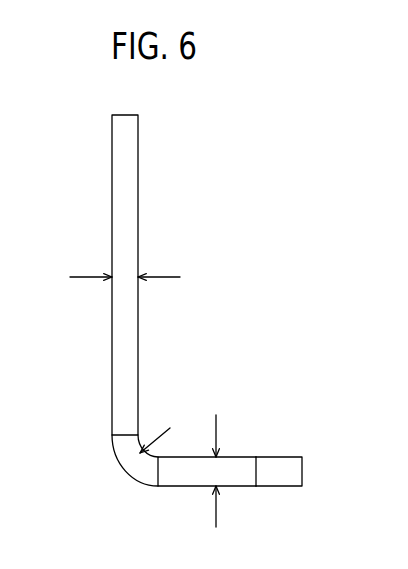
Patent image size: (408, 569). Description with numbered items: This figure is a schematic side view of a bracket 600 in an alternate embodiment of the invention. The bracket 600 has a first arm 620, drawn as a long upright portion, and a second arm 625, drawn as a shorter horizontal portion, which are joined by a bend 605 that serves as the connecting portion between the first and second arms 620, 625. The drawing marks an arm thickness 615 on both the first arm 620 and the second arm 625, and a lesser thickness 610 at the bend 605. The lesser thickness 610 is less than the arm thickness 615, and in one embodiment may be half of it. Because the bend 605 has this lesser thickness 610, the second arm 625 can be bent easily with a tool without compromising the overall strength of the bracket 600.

The bracket 600 is at (223, 152).
The bend 605 is at (143, 467).
The lesser thickness 610 is at (126, 468).
The arm thickness 615 is at (85, 277).
The first arm 620 is at (125, 218).
The second arm 625 is at (287, 472).